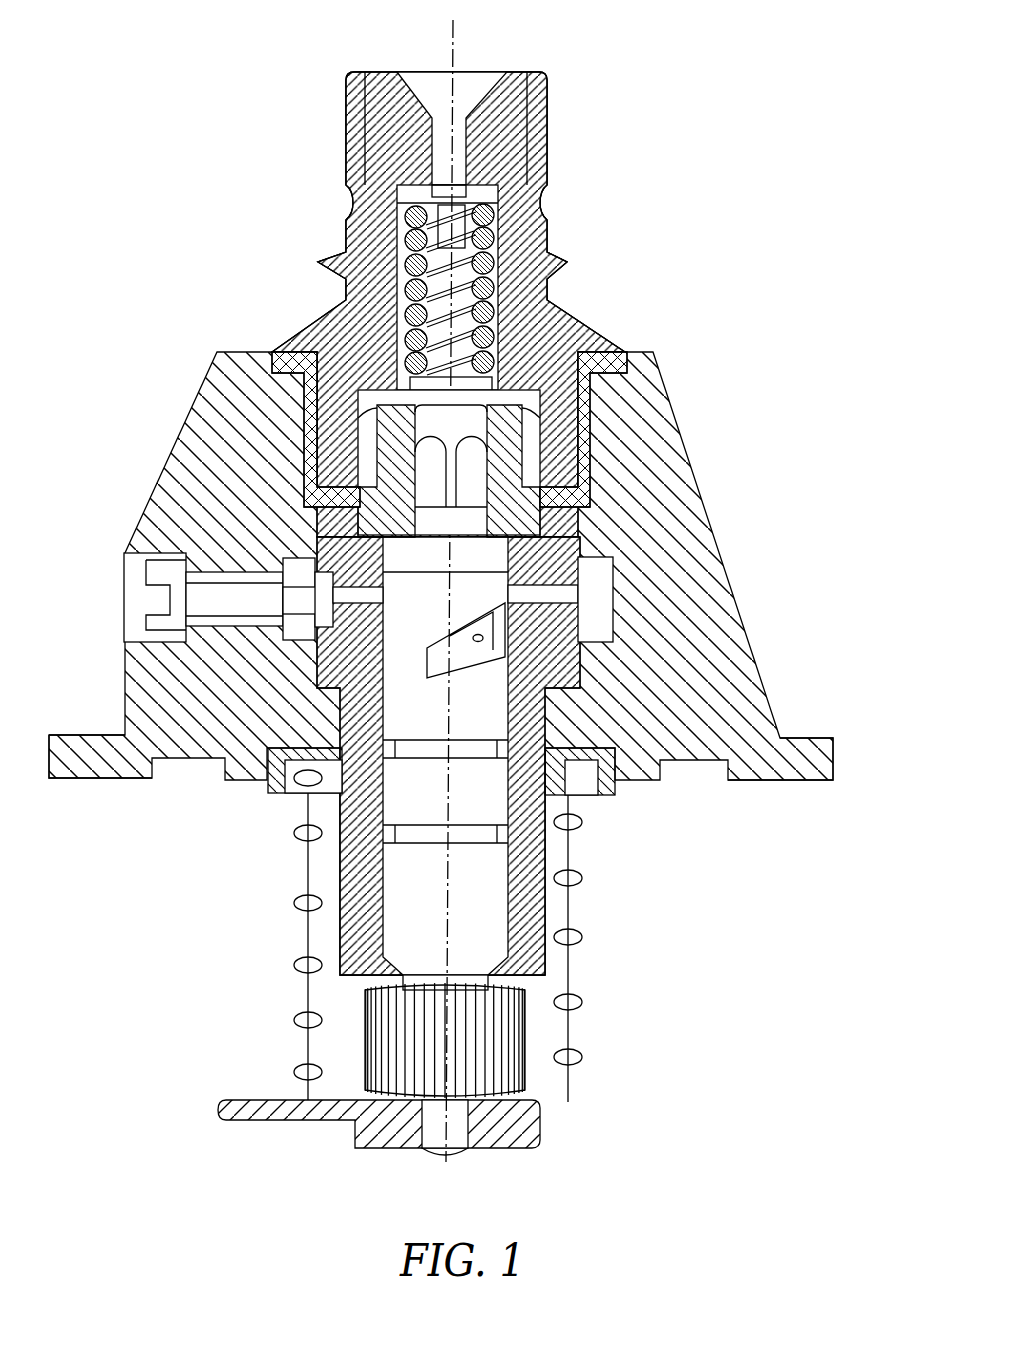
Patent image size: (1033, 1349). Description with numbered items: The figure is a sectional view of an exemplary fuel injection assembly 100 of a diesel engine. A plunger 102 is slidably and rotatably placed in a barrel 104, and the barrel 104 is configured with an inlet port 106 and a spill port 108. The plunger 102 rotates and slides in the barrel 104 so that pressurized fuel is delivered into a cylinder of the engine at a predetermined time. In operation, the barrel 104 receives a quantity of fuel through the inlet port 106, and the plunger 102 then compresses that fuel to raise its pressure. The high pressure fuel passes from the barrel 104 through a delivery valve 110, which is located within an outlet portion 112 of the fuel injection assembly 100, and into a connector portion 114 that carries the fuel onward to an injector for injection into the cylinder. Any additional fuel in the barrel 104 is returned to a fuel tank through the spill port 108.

The fuel injection assembly 100 is at (722, 63).
The plunger 102 is at (492, 708).
The barrel 104 is at (780, 738).
The inlet port 106 is at (540, 592).
The spill port 108 is at (353, 597).
The delivery valve 110 is at (467, 420).
The outlet portion 112 is at (513, 432).
The connector portion 114 is at (360, 230).